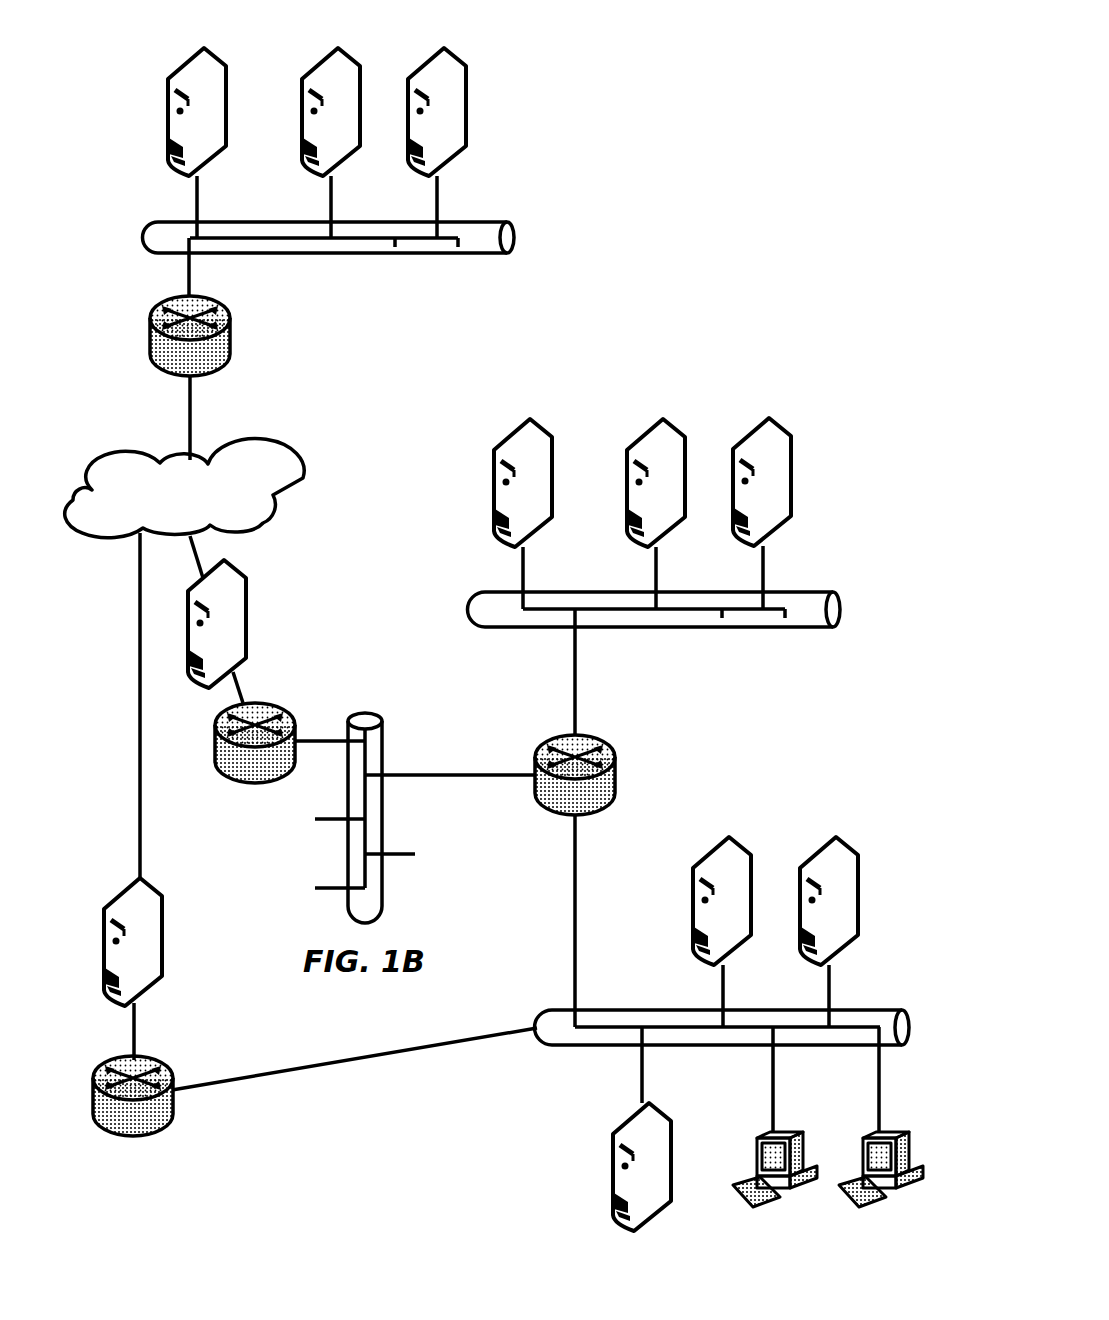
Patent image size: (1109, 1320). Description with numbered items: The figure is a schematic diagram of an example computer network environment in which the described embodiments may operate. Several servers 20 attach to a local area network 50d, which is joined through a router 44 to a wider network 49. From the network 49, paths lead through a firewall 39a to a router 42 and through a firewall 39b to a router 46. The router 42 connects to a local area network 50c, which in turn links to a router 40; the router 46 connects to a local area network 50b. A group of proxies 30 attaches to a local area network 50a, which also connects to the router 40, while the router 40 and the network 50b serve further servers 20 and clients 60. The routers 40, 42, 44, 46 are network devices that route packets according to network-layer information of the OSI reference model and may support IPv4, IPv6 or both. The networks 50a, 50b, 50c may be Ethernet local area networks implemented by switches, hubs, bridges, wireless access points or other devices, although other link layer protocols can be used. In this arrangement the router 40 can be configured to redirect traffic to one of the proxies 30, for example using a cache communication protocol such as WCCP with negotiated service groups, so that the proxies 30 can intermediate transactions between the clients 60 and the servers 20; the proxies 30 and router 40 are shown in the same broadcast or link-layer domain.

The server 20 is at (167, 112).
The proxy 30 is at (495, 482).
The firewall 39a is at (245, 612).
The firewall 39b is at (163, 928).
The router 40 is at (613, 778).
The router 42 is at (283, 711).
The router 44 is at (148, 332).
The router 46 is at (173, 1103).
The network 49 is at (290, 493).
The network 50a is at (845, 608).
The network 50b is at (910, 1027).
The network 50c is at (365, 713).
The network bus 50d is at (518, 238).
The client 60 is at (755, 1163).